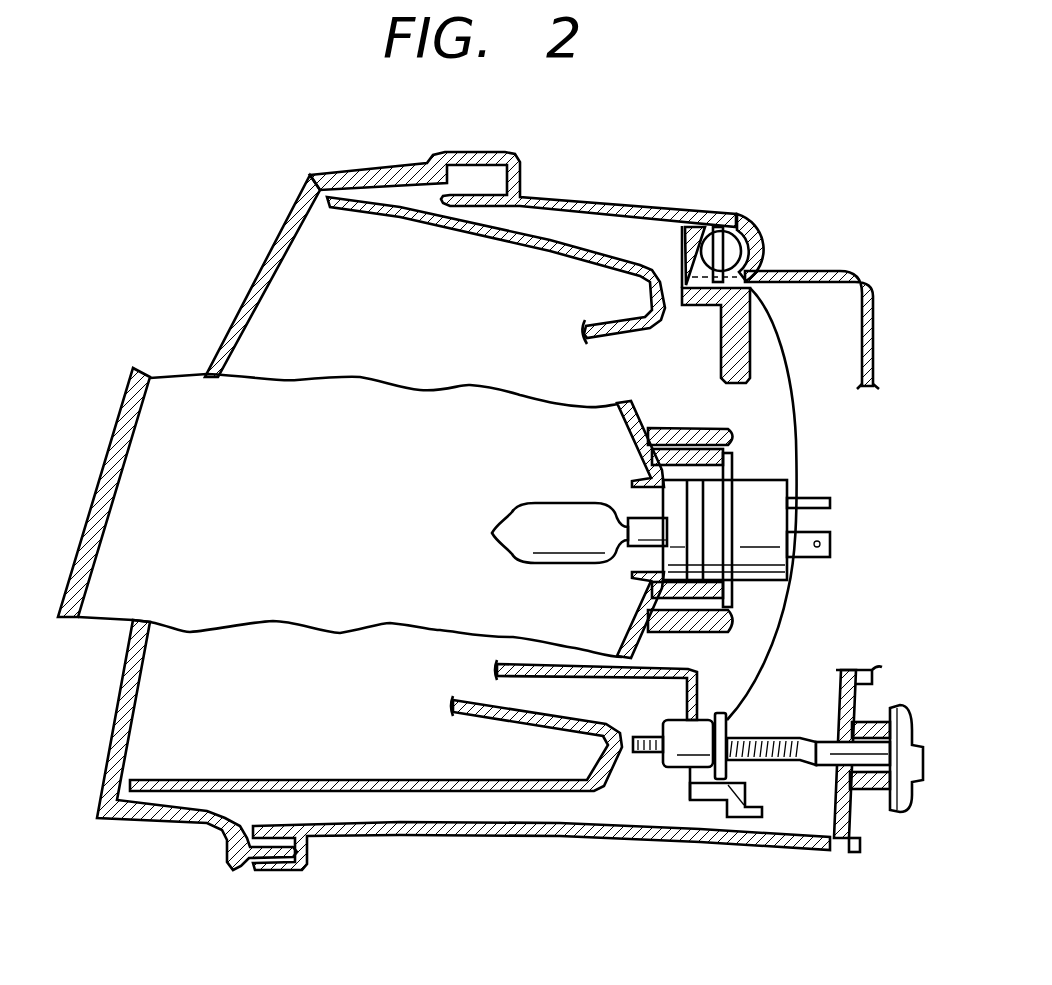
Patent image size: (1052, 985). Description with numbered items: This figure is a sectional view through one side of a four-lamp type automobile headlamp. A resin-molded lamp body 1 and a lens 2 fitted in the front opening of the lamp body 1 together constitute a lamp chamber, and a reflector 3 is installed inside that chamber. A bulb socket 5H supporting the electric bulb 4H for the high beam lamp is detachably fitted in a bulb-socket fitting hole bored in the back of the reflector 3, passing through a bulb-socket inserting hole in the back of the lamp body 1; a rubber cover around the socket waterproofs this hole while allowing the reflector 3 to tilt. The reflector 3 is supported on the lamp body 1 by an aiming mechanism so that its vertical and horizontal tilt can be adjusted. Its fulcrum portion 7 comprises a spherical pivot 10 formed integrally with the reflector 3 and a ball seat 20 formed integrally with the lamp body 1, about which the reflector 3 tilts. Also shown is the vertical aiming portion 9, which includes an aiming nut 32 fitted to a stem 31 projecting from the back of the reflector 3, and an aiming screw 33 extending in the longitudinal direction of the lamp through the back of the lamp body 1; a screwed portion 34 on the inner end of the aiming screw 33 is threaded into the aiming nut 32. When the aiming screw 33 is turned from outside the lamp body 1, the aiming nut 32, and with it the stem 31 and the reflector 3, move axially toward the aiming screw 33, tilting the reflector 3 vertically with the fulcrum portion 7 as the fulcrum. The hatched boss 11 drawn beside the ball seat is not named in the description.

The lamp body 1 is at (599, 200).
The lens 2 is at (222, 340).
The reflector 3 is at (727, 421).
The electric bulb 4H is at (543, 520).
The bulb socket 5H is at (780, 564).
The fulcrum portion 7 is at (795, 256).
The vertical aiming portion 9 is at (678, 808).
The spherical pivot 10 is at (741, 250).
The pivot boss 11 is at (755, 358).
The ball seat 20 is at (689, 228).
The stem 31 is at (560, 681).
The aiming nut 32 is at (679, 752).
The aiming screw 33 is at (833, 758).
The screwed portion 34 is at (766, 741).